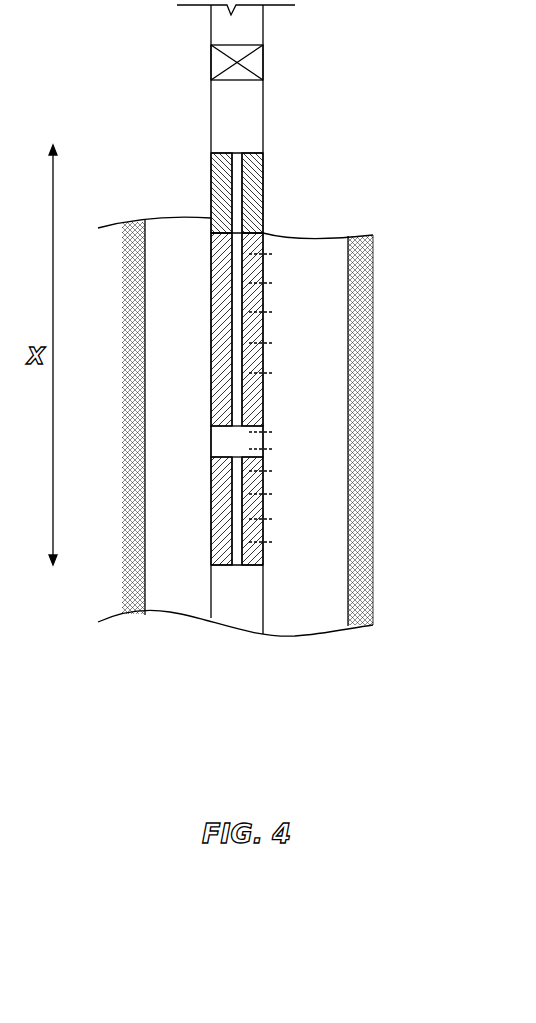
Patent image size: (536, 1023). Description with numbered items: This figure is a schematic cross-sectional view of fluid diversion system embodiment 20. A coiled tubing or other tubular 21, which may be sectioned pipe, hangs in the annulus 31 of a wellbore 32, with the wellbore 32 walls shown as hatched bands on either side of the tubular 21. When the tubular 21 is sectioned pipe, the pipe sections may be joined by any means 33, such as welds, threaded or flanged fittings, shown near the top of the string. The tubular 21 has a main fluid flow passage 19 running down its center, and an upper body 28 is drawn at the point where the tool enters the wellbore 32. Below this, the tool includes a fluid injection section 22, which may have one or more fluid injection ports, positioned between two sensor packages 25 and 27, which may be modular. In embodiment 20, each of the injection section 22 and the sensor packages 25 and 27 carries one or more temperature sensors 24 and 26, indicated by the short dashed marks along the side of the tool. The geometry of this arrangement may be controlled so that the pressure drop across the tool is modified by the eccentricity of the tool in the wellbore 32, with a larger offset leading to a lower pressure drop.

The main fluid flow passage 19 is at (239, 152).
The fluid diversion system embodiment 20 is at (358, 98).
The tubular 21 is at (264, 162).
The fluid injection section 22 is at (275, 457).
The temperature sensors 24 is at (253, 373).
The sensor package 25 is at (257, 528).
The temperature sensors 26 is at (250, 519).
The sensor package 27 is at (253, 272).
The upper plug / packer body 28 is at (253, 212).
The annulus 31 is at (181, 595).
The wellbore 32 is at (170, 205).
The joining means 33 is at (264, 60).